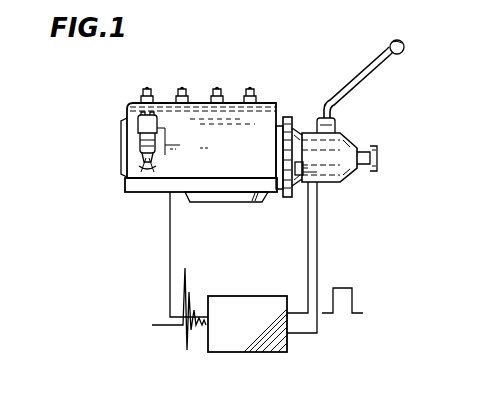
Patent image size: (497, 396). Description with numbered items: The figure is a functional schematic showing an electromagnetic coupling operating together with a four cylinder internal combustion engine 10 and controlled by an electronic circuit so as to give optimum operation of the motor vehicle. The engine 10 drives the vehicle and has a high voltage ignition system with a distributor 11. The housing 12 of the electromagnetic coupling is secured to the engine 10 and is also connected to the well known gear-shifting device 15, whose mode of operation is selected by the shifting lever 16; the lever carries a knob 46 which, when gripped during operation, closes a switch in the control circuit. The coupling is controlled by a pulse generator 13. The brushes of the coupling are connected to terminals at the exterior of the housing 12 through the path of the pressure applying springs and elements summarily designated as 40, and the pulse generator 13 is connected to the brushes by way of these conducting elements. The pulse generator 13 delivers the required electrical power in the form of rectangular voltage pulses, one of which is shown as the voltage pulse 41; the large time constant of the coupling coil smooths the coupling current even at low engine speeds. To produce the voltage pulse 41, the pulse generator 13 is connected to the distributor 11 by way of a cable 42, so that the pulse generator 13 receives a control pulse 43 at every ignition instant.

The internal combustion engine 10 is at (262, 114).
The distributor 11 is at (140, 135).
The housing 12 is at (294, 134).
The pulse generator 13 is at (225, 338).
The gear-shifting device 15 is at (358, 172).
The shifting lever 16 is at (364, 77).
The pressure applying springs and elements 40 is at (299, 186).
The voltage pulse 41 is at (355, 305).
The cable 42 is at (169, 268).
The control pulse 43 is at (190, 290).
The knob 46 is at (404, 42).